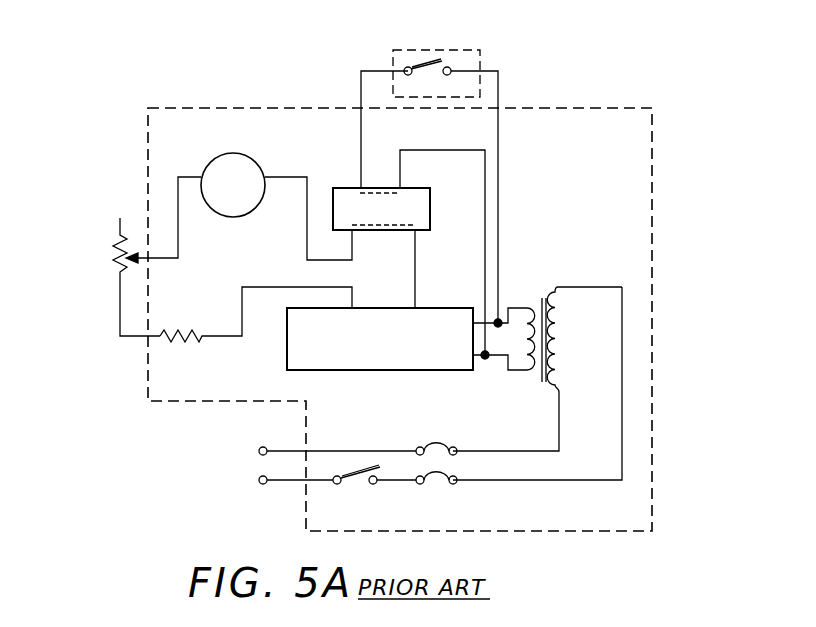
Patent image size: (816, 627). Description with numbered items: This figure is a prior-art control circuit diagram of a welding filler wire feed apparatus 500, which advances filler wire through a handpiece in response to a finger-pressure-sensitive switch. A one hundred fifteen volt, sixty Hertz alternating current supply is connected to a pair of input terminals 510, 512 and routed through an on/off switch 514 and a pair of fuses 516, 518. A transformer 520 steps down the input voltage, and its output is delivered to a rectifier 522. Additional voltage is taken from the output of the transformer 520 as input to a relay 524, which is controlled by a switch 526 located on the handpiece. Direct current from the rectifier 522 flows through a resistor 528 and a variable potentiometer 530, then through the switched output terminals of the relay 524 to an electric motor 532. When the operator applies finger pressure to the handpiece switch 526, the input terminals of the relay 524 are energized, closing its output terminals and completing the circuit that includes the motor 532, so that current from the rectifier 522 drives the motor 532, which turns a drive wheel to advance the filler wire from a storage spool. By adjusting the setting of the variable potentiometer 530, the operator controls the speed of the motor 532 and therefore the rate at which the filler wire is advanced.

The welding filler wire feed apparatus 500 is at (668, 86).
The input terminal 510 is at (262, 446).
The input terminal 512 is at (265, 485).
The on/off switch 514 is at (350, 485).
The fuse 516 is at (440, 446).
The fuse 518 is at (432, 486).
The transformer 520 is at (544, 298).
The rectifier 522 is at (365, 372).
The relay 524 is at (431, 207).
The switch 526 is at (480, 50).
The resistor 528 is at (200, 341).
The variable potentiometer 530 is at (118, 258).
The electric motor 532 is at (248, 156).